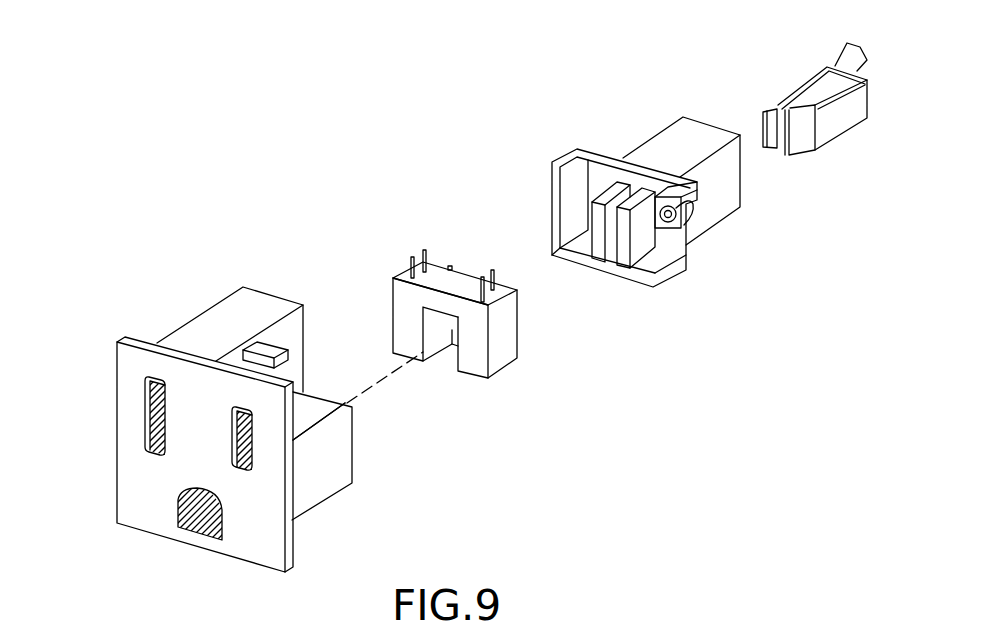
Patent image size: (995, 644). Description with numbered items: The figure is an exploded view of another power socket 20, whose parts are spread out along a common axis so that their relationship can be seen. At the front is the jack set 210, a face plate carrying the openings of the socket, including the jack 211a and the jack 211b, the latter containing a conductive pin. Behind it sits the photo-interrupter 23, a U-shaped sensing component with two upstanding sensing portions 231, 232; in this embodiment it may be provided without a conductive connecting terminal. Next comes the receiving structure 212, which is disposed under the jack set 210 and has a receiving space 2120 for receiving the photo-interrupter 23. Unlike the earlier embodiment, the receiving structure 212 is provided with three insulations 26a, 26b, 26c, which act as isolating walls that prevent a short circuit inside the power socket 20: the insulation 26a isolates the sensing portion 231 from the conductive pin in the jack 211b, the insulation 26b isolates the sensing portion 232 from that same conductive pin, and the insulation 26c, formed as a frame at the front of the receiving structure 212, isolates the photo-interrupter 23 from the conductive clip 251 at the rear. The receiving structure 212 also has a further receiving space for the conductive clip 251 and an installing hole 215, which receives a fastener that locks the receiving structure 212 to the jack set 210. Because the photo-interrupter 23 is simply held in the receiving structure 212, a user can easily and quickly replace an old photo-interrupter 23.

The power socket 20 is at (200, 48).
The jack set 210 is at (250, 542).
The jack 211a is at (150, 428).
The jack 211b is at (248, 447).
The photo-interrupter 23 is at (460, 278).
The sensing portion 231 is at (401, 323).
The sensing portion 232 is at (473, 365).
The receiving structure 212 is at (712, 208).
The receiving space 2120 is at (581, 208).
The insulation 26a is at (606, 233).
The insulation 26b is at (617, 256).
The insulation 26c is at (617, 159).
The installing hole 215 is at (660, 228).
The conductive clip 251 is at (782, 95).